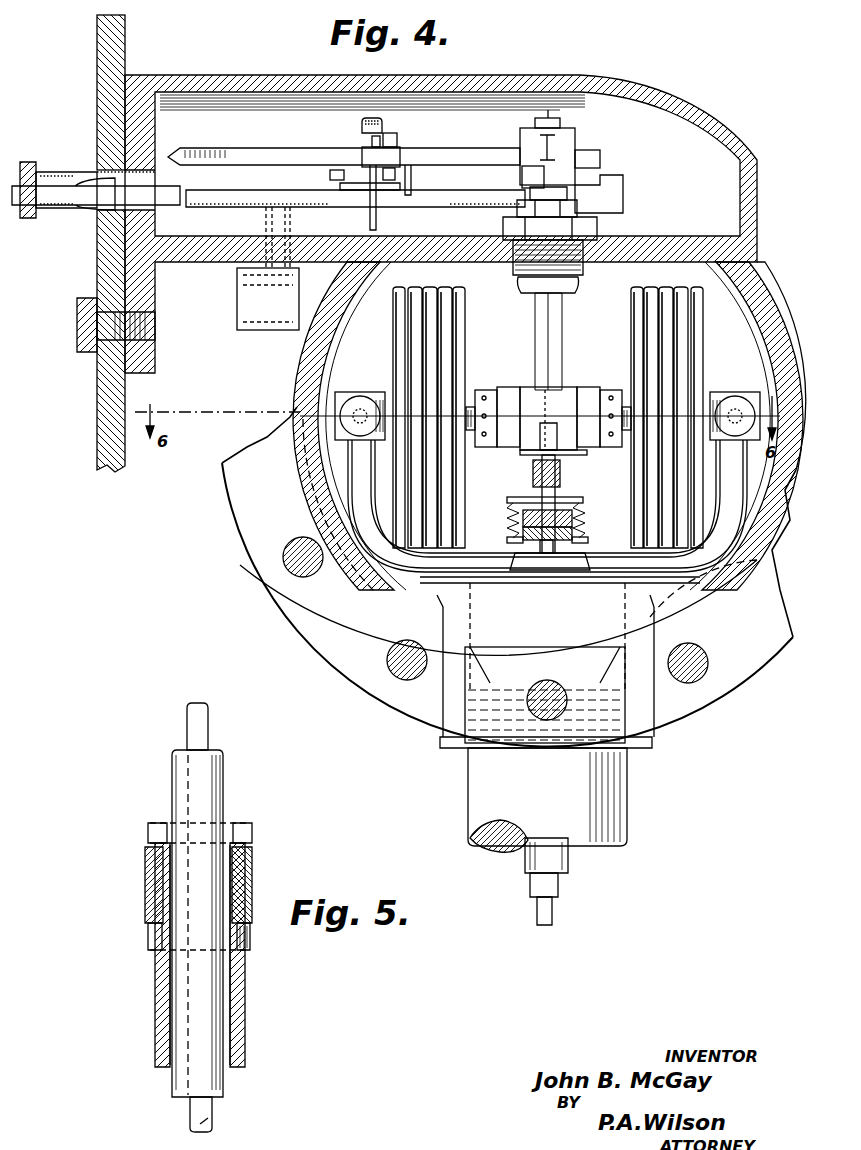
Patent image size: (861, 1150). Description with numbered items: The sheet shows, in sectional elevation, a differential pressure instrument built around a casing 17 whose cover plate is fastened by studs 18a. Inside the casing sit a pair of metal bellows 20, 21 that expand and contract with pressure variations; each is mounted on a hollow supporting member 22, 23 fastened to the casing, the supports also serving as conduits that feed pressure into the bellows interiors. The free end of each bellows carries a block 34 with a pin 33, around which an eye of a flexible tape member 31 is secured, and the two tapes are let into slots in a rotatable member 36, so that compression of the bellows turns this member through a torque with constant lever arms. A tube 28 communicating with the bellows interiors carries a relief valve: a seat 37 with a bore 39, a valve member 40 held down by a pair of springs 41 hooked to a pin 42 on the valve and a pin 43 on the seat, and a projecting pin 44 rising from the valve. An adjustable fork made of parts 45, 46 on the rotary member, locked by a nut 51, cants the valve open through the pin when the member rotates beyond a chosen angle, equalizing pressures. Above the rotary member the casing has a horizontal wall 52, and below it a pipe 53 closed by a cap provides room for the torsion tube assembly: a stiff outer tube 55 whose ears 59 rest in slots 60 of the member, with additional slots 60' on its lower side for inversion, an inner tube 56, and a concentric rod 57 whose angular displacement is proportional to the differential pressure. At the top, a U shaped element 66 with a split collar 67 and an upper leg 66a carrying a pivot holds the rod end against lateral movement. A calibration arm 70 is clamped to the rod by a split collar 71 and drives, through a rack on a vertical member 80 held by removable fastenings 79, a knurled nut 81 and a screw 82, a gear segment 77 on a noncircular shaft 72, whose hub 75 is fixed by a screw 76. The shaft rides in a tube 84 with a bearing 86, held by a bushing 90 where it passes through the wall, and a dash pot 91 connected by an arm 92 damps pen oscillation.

In FIG. 4, the casing 17 is at (763, 300).
In FIG. 4, the studs 18a is at (285, 563).
In FIG. 4, the bellows 20 is at (458, 330).
In FIG. 4, the bellows 21 is at (632, 322).
In FIG. 4, the supporting member 22 is at (343, 392).
In FIG. 4, the supporting member 23 is at (722, 398).
In FIG. 4, the tube 28 is at (500, 585).
In FIG. 4, the flexible tape member 31 is at (505, 390).
In FIG. 4, the pin 33 is at (478, 430).
In FIG. 4, the block 34 is at (492, 406).
In FIG. 4, the rotatable member 36 is at (530, 387).
In FIG. 4, the valve seat 37 is at (573, 533).
In FIG. 4, the bore 39 is at (548, 572).
In FIG. 4, the valve member 40 is at (573, 519).
In FIG. 4, the springs 41 is at (507, 512).
In FIG. 4, the pin 42 is at (520, 498).
In FIG. 4, the pin 43 is at (507, 540).
In FIG. 4, the projecting pin 44 is at (556, 482).
In FIG. 4, the fork part 45 is at (570, 455).
In FIG. 4, the fork part 46 is at (533, 470).
In FIG. 4, the nut 51 is at (555, 425).
In FIG. 4, the horizontal wall 52 is at (675, 245).
In FIG. 4, the pipe 53 is at (603, 812).
In FIG. 4, the tube 55 is at (570, 866).
In FIG. 5, the tube 55 is at (246, 1010).
In FIG. 4, the tube 56 is at (560, 892).
In FIG. 5, the tube 56 is at (224, 1080).
In FIG. 5, the rod 57 is at (214, 1115).
In FIG. 5, the ears 59 is at (145, 847).
In FIG. 5, the slots 60 is at (196, 824).
In FIG. 5, the additional slots 60' is at (197, 943).
In FIG. 4, the U shaped element 66 is at (525, 145).
In FIG. 4, the upper leg 66a is at (555, 128).
In FIG. 4, the split collar 67 is at (522, 174).
In FIG. 4, the calibration arm 70 is at (443, 156).
In FIG. 4, the split collar 71 is at (582, 158).
In FIG. 4, the shaft 72 is at (458, 195).
In FIG. 4, the hub 75 is at (410, 196).
In FIG. 4, the screw 76 is at (398, 150).
In FIG. 4, the gear segment 77 is at (396, 176).
In FIG. 4, the removable fastenings 79 is at (345, 176).
In FIG. 4, the member 80 is at (370, 221).
In FIG. 4, the knurled nut 81 is at (362, 121).
In FIG. 4, the screw 82 is at (390, 133).
In FIG. 4, the tube 84 is at (612, 183).
In FIG. 4, the bearing 86 is at (40, 210).
In FIG. 4, the bushing 90 is at (108, 162).
In FIG. 4, the dash pot 91 is at (236, 307).
In FIG. 4, the arm 92 is at (266, 219).